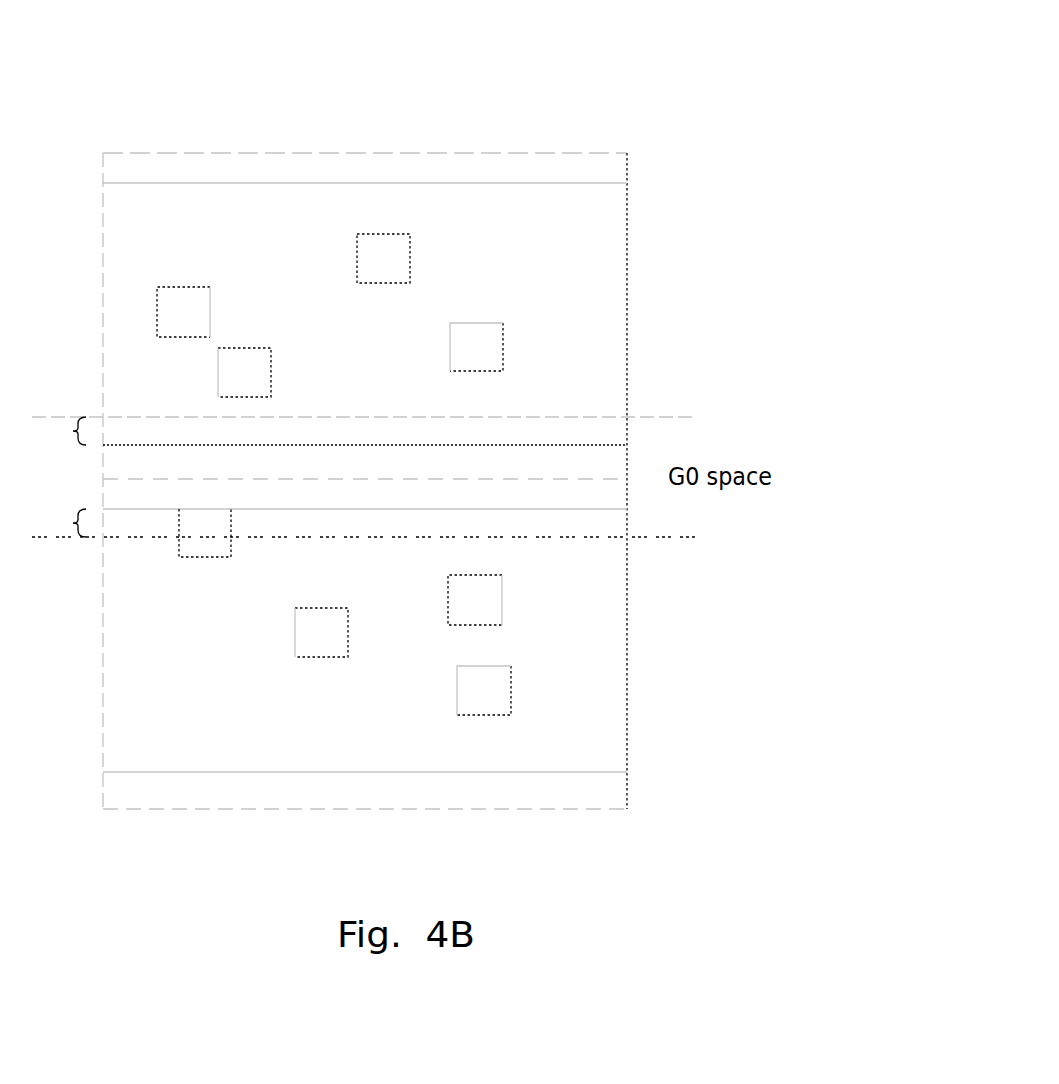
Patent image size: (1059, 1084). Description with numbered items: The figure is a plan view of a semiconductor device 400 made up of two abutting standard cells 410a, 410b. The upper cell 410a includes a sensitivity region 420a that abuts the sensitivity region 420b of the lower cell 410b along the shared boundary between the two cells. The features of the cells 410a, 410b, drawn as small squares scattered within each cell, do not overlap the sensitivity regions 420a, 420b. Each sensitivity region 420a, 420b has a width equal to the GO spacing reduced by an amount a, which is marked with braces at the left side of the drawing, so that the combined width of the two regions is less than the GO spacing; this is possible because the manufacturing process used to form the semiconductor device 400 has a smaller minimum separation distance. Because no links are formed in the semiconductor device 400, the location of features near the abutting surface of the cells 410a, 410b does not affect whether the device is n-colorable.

The semiconductor device 400 is at (662, 94).
The standard cell 410a is at (628, 262).
The standard cell 410b is at (628, 645).
The sensitivity region 420a is at (615, 462).
The sensitivity region 420b is at (617, 495).